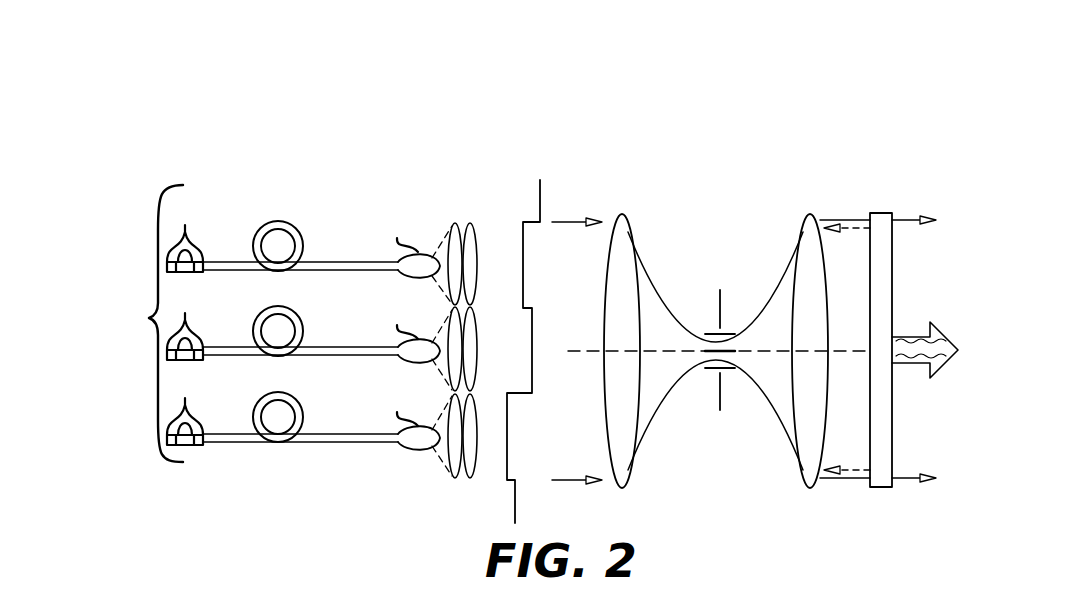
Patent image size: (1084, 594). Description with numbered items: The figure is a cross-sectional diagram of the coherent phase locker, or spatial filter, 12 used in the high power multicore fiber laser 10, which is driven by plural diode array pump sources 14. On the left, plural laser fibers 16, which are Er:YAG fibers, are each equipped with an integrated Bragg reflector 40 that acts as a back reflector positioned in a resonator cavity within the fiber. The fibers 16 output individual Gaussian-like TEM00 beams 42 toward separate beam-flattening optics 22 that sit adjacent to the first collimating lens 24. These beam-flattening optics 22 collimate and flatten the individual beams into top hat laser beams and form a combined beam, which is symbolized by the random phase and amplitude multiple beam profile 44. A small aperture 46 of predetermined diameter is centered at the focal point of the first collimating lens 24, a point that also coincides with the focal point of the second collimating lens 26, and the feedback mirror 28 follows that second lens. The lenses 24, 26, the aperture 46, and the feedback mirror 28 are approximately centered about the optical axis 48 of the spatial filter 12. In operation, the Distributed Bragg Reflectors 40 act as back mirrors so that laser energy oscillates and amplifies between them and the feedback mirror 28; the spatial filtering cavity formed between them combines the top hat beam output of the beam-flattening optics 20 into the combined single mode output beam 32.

The high power multicore fiber laser 10 is at (305, 135).
The coherent phase locker 12 is at (718, 185).
The diode array pump sources 14 is at (126, 369).
The laser fibers 16 is at (297, 218).
The beam-flattening optics 20 is at (466, 182).
The beam-flattening optics 22 is at (472, 243).
The first collimating lens 24 is at (620, 214).
The second collimating lens 26 is at (810, 214).
The feedback mirror 28 is at (880, 212).
The combined single mode output beam 32 is at (915, 335).
The integrated Bragg reflectors 40 is at (185, 325).
The Gaussian-like TEM00 beams 42 is at (397, 280).
The random phase and amplitude multiple beam profile 44 is at (540, 195).
The small aperture 46 is at (722, 352).
The optical axis 48 is at (575, 344).